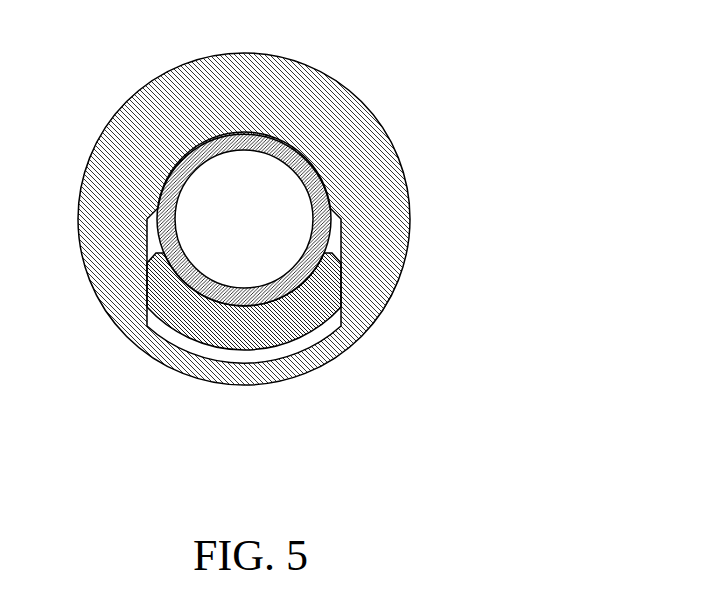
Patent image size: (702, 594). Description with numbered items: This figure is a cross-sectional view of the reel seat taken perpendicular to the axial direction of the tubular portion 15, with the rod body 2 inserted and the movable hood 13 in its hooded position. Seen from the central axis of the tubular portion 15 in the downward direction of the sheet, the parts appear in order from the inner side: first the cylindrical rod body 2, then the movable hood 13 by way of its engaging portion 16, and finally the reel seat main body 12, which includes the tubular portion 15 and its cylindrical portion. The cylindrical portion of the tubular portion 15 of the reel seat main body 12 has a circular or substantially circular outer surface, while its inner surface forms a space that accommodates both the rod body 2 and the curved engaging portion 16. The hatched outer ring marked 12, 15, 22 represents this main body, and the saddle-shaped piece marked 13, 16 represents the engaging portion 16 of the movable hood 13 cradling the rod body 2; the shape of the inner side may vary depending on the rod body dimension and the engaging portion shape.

The rod body 2 is at (173, 178).
The reel seat main body 12 is at (325, 219).
The tubular portion 15 is at (325, 219).
The housing wall 22 is at (377, 164).
The movable hood 13 is at (342, 301).
The engaging portion 16 is at (315, 303).